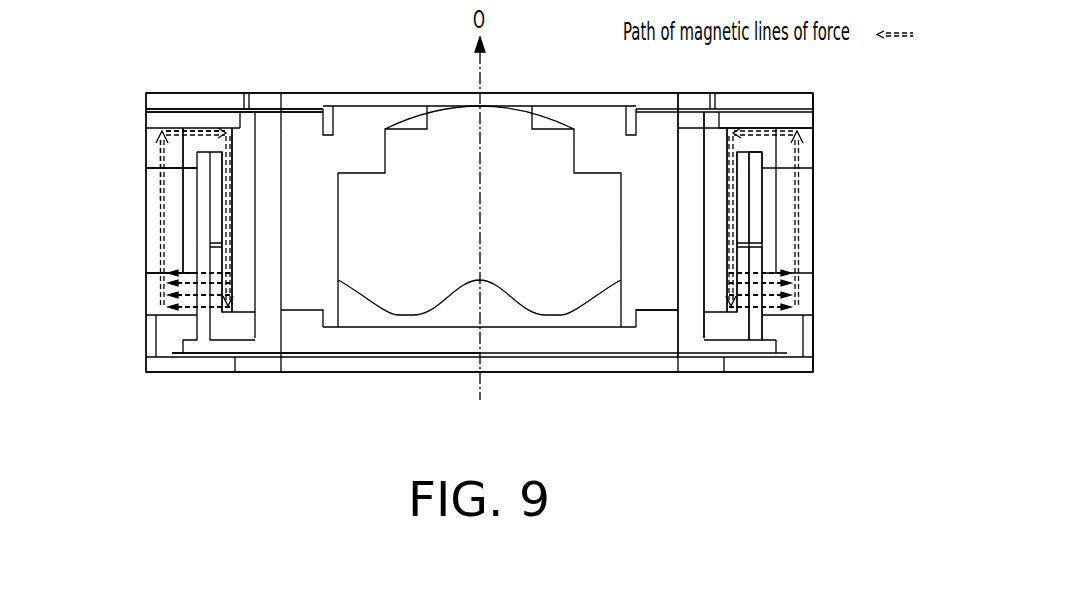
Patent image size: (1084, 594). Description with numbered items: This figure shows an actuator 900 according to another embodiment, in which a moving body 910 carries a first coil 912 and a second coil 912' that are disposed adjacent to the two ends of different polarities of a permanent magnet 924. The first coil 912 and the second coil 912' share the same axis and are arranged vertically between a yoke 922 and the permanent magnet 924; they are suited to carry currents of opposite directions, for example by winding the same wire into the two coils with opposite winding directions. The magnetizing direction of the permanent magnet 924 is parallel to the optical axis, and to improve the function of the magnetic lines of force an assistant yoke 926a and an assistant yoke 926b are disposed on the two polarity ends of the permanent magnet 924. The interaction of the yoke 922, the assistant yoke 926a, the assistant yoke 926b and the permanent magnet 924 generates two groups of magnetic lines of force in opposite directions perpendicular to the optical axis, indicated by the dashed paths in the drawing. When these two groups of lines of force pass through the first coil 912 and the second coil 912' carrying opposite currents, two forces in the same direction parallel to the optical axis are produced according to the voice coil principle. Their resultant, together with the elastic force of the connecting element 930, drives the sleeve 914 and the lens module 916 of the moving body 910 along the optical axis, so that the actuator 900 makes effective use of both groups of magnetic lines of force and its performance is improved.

The actuator 900 is at (813, 436).
The moving body 910 is at (877, 148).
The first coil 912 is at (810, 197).
The second coil 912' is at (813, 290).
The sleeve 914 is at (693, 258).
The lens module 916 is at (663, 240).
The yoke 922 is at (229, 168).
The permanent magnet 924 is at (153, 240).
The assistant yoke 926a is at (153, 163).
The assistant yoke 926b is at (153, 292).
The connecting element 930 is at (216, 109).